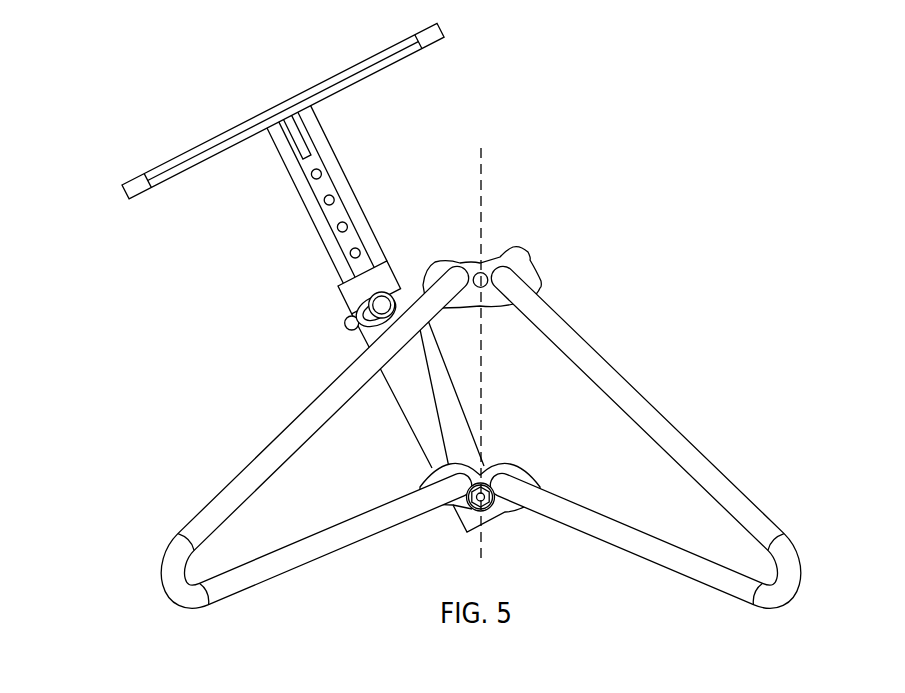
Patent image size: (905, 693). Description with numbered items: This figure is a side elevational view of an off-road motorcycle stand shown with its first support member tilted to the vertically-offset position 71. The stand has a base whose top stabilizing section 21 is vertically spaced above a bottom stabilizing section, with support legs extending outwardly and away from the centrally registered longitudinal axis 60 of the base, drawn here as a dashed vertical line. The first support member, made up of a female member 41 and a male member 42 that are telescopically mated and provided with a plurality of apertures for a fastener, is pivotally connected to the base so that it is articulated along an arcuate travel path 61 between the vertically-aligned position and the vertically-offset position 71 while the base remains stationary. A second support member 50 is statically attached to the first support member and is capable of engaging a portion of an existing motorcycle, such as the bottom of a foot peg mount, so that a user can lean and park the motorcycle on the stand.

The vertically-offset position 71 is at (301, 111).
The second support member 50 is at (373, 67).
The male member 42 is at (293, 182).
The female member 41 is at (353, 290).
The arcuate travel path 61 is at (493, 232).
The centrally registered longitudinal axis 60 is at (482, 172).
The top stabilizing section 21 is at (561, 243).